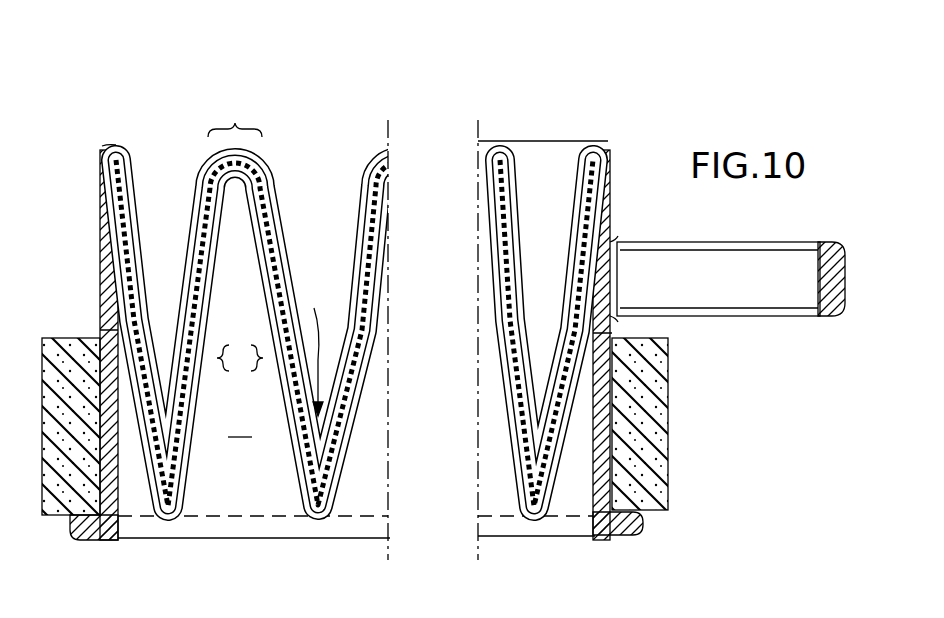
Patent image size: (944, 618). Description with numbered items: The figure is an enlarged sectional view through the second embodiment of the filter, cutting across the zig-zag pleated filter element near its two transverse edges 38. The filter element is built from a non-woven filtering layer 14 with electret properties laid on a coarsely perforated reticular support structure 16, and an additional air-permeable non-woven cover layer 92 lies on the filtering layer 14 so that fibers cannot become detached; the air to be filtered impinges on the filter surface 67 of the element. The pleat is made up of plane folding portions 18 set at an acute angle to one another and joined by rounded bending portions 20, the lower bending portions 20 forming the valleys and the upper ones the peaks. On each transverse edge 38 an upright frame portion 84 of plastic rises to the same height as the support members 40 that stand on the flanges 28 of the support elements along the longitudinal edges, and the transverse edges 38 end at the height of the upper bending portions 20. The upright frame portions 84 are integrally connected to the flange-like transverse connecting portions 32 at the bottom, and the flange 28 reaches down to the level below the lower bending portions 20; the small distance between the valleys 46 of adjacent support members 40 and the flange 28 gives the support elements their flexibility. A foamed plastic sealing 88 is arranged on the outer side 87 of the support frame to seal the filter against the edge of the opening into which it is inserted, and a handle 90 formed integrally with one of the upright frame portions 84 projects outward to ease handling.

The non-woven filtering layer 14 is at (258, 295).
The reticular support structure 16 is at (122, 253).
The plane folding portions 18 is at (240, 358).
The bending portions 20 is at (235, 116).
The flange 28 is at (150, 540).
The transverse connecting portions 32 is at (80, 545).
The transverse edges 38 is at (100, 139).
The support members 40 is at (240, 423).
The valleys of adjacent support members 46 is at (312, 347).
The filter surface 67 is at (287, 214).
The upright frame portions 84 is at (103, 268).
The outer side of filter element support frame 87 is at (100, 318).
The foamed plastic sealing 88 is at (62, 352).
The handle 90 is at (733, 288).
The cover layer 92 is at (127, 150).